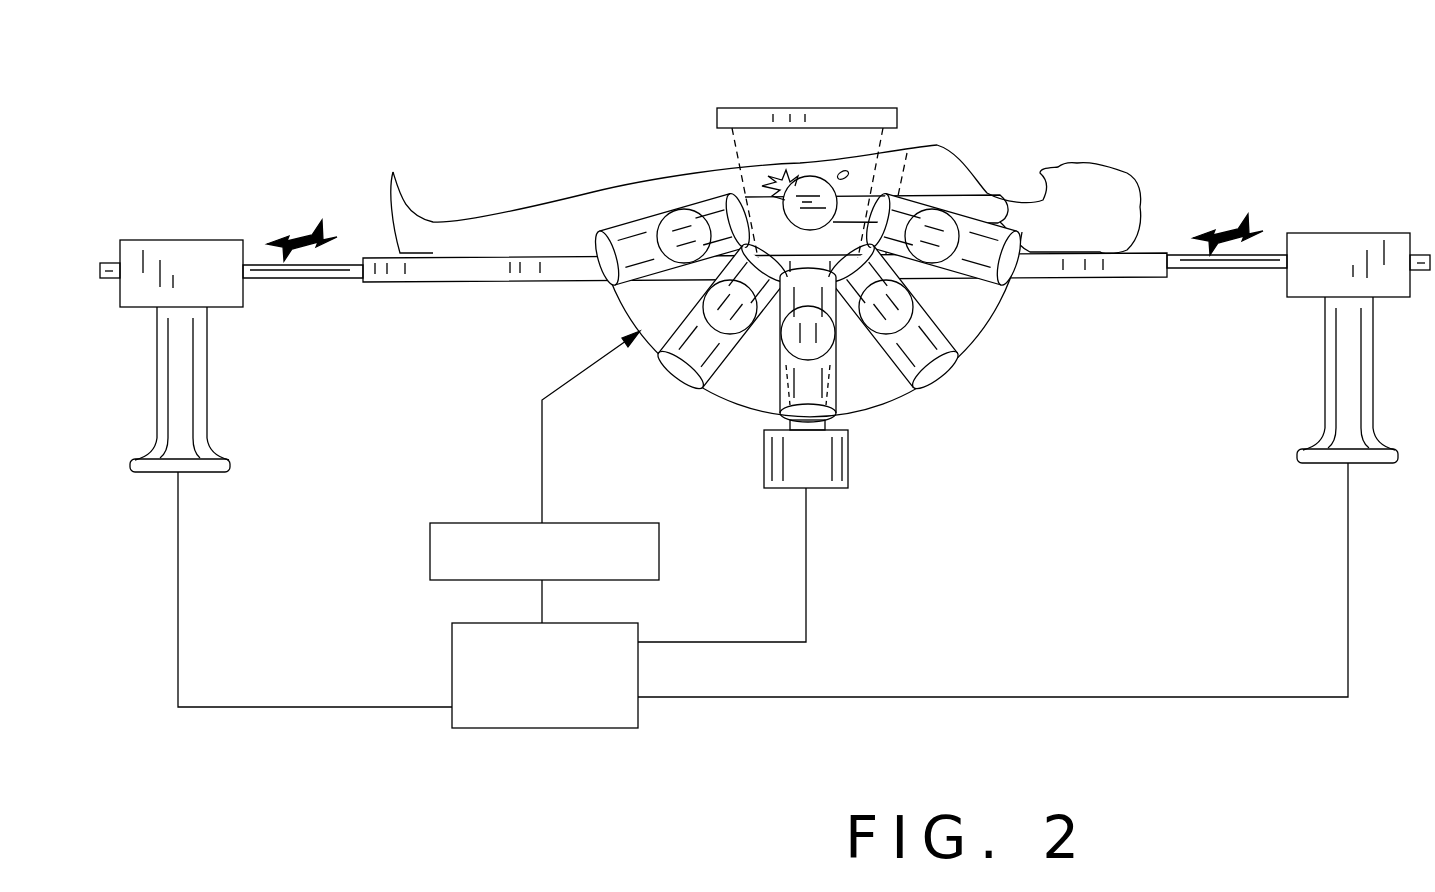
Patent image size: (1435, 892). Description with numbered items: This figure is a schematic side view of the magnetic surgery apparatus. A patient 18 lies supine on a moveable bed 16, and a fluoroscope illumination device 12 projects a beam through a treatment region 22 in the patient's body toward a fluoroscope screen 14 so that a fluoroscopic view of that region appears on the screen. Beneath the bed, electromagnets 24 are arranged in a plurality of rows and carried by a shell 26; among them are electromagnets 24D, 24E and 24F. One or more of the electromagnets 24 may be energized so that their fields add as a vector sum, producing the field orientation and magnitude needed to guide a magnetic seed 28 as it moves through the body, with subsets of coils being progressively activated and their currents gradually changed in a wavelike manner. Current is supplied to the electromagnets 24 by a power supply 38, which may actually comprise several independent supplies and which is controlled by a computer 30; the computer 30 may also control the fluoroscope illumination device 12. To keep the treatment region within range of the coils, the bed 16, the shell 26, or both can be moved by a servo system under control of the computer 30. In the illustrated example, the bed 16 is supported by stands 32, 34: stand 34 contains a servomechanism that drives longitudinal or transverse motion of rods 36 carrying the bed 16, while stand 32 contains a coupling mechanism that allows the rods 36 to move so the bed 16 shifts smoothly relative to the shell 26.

The fluoroscope illumination device 12 is at (848, 462).
The fluoroscope screen 14 is at (847, 108).
The moveable bed 16 is at (1152, 254).
The patient 18 is at (973, 163).
The treatment region 22 is at (907, 170).
The electromagnets 24 is at (700, 308).
The electromagnet 24D is at (838, 384).
The electromagnet 24E is at (780, 337).
The electromagnet 24F is at (795, 178).
The shell 26 is at (1003, 282).
The magnetic seed 28 is at (849, 172).
The computer 30 is at (542, 728).
The stand 32 is at (180, 240).
The stand 34 is at (1318, 233).
The rods 36 is at (298, 279).
The power supply 38 is at (659, 557).